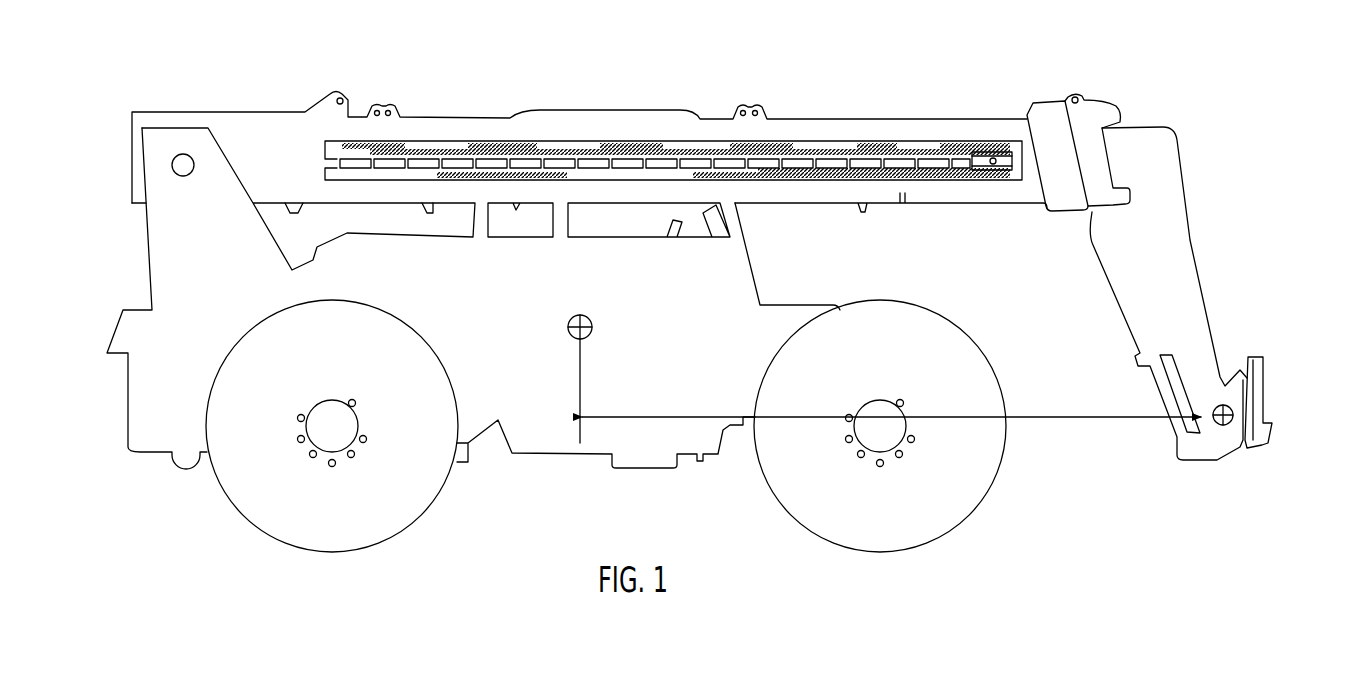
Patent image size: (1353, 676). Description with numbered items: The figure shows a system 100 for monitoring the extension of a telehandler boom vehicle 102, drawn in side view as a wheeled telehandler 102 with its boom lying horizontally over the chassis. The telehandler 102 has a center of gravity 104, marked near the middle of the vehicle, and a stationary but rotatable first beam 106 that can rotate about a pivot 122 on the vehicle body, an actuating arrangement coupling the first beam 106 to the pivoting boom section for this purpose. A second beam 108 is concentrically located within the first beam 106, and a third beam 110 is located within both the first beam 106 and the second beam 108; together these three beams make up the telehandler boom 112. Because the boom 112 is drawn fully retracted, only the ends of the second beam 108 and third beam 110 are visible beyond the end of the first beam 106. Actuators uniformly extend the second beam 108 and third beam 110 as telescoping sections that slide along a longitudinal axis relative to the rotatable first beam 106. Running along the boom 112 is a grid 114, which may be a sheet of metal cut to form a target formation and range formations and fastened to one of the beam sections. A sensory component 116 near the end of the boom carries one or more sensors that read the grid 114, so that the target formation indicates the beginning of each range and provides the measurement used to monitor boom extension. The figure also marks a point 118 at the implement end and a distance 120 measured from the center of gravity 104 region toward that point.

The system 100 is at (603, 77).
The telehandler boom vehicle 102 is at (170, 270).
The center of gravity 104 is at (568, 322).
The first beam 106 is at (905, 118).
The second beam 108 is at (1090, 115).
The third beam 110 is at (1162, 147).
The telehandler boom 112 is at (1080, 52).
The grid 114 is at (830, 148).
The sensory component 116 is at (995, 180).
The implement pin 118 is at (1237, 402).
The distance 120 is at (1033, 420).
The pivot 122 is at (178, 170).